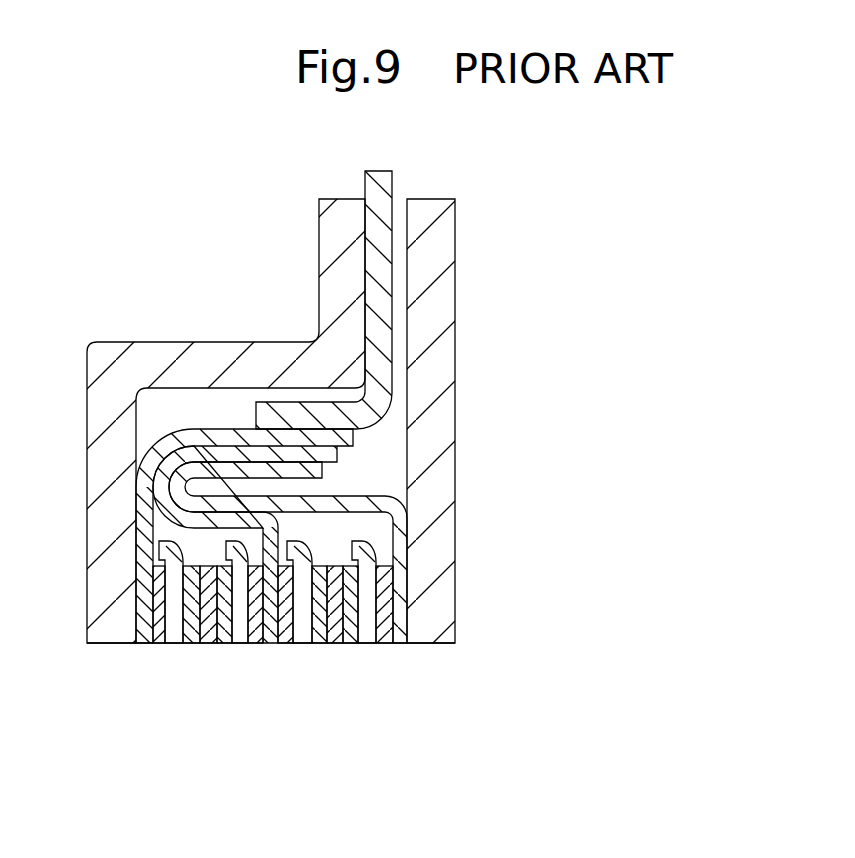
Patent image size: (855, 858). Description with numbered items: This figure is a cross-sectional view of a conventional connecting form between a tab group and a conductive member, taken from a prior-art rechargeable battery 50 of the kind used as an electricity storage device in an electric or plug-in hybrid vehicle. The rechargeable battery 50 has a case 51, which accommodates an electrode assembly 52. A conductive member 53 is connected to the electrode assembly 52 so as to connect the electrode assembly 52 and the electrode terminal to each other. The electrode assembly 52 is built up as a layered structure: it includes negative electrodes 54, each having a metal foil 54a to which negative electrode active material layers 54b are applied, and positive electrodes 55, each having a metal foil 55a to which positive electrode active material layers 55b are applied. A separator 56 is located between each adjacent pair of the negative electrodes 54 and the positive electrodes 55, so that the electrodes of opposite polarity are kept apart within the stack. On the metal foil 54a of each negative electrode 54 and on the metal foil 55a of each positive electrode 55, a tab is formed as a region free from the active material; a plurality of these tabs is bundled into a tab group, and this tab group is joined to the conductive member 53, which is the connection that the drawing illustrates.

The rechargeable battery 50 is at (113, 195).
The case 51 is at (319, 226).
The electrode assembly 52 is at (383, 478).
The conductive member 53 is at (380, 171).
The negative electrode 54 is at (313, 732).
The metal foil 54a is at (268, 645).
The negative electrode active material layer 54b is at (255, 645).
The positive electrode 55 is at (465, 732).
The metal foil 55a is at (335, 645).
The positive electrode active material layer 55b is at (318, 645).
The separator 56 is at (240, 645).